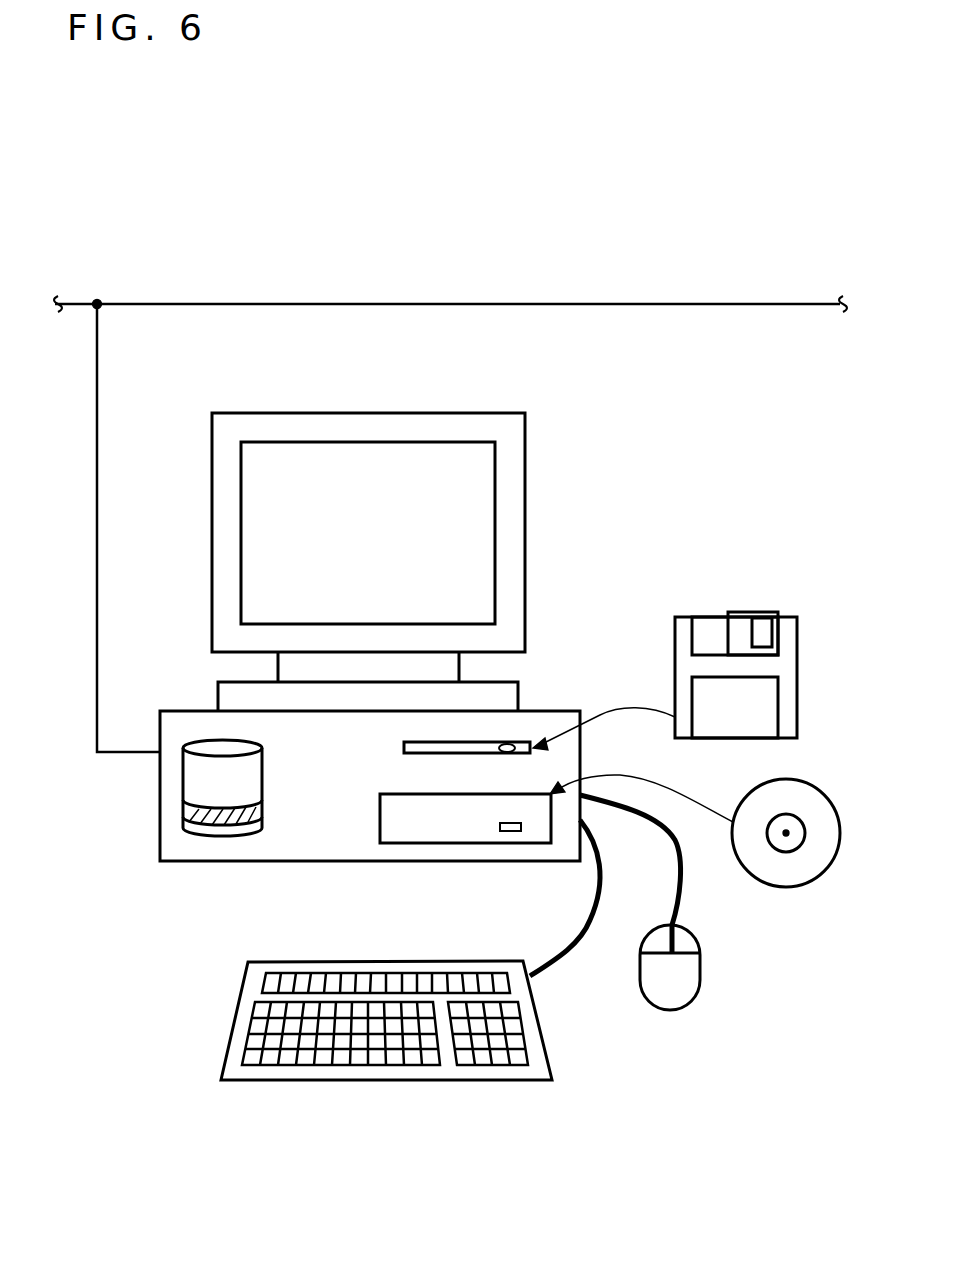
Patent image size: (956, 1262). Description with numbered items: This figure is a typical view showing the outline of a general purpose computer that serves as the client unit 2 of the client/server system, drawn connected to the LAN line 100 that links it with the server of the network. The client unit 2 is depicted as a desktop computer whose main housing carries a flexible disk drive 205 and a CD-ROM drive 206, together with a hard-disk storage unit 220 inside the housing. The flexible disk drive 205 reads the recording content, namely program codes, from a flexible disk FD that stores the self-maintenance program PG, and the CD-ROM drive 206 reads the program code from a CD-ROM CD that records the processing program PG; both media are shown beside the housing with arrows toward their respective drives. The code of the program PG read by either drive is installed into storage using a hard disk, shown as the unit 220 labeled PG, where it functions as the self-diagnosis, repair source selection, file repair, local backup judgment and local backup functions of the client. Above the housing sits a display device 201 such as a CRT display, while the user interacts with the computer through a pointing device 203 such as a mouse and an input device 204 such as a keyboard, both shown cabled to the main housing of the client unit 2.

The LAN line 100 is at (625, 304).
The display device 201 is at (440, 413).
The client unit 2 is at (564, 689).
The flexible disk drive 205 is at (402, 744).
The CD-ROM drive 206 is at (379, 817).
The hard disk 220 is at (175, 833).
The self-maintenance program PG is at (181, 810).
The input device 204 is at (232, 1020).
The pointing device 203 is at (700, 977).
The flexible disk FD is at (785, 617).
The CD-ROM CD is at (810, 887).